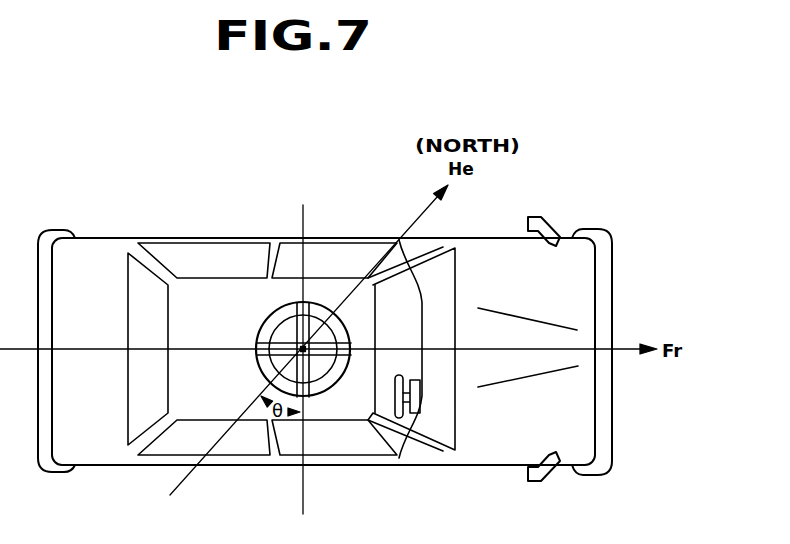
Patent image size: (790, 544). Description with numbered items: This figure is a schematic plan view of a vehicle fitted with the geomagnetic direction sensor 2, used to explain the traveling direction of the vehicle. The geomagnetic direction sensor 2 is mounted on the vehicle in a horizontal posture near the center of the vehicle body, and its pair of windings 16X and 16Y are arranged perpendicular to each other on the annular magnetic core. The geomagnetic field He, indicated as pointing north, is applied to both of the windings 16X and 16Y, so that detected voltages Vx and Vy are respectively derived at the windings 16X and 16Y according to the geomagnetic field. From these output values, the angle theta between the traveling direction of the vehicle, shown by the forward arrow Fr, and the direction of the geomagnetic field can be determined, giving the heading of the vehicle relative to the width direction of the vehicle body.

The geomagnetic direction sensor 2 is at (332, 283).
The winding 16X is at (300, 347).
The winding 16Y is at (310, 375).